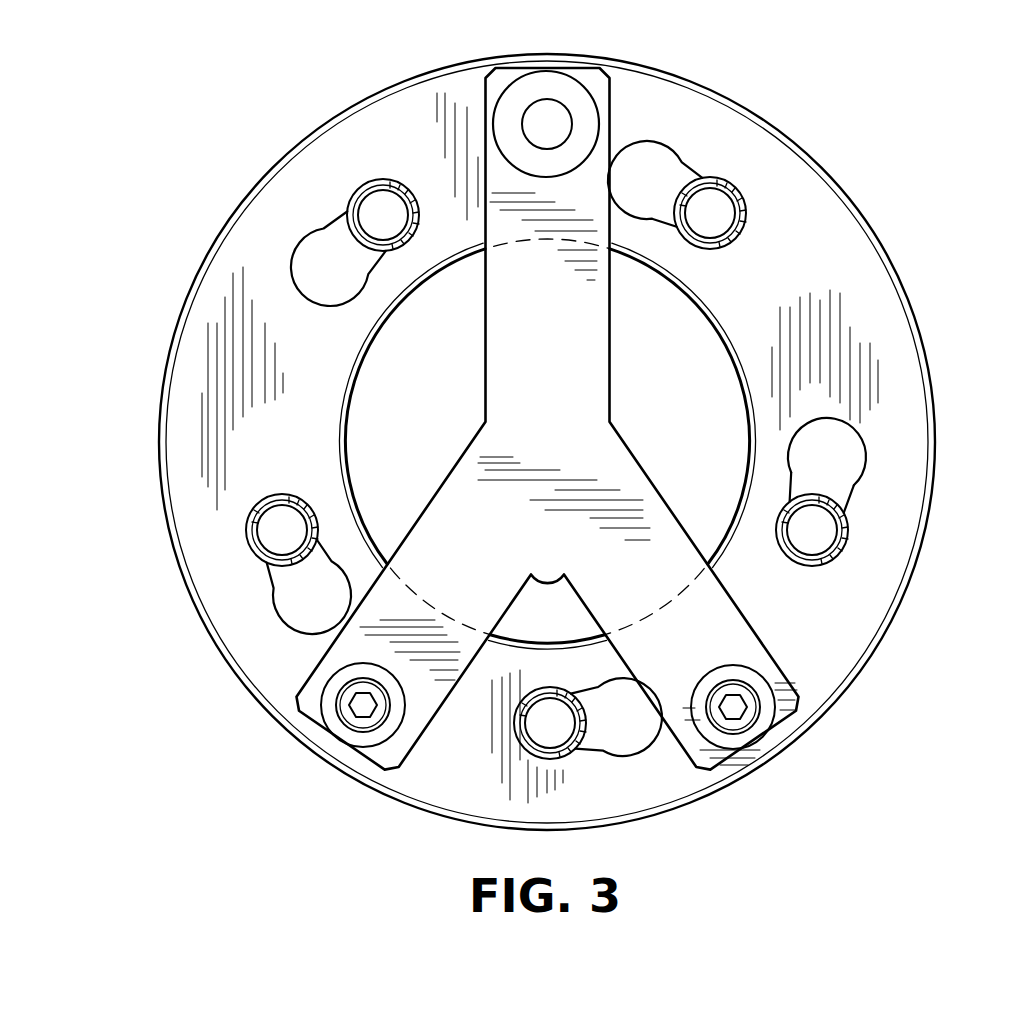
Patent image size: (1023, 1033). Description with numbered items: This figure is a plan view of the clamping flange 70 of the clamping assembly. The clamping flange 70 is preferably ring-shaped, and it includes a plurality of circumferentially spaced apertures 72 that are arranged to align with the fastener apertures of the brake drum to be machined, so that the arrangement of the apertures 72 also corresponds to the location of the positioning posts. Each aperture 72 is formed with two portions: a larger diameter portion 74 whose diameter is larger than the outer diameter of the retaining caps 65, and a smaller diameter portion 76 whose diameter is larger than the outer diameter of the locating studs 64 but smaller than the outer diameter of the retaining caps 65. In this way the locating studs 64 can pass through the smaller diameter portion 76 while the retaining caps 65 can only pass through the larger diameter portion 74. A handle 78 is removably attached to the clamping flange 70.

The locating stud 64 is at (713, 210).
The retaining cap 65 is at (747, 212).
The clamping flange 70 is at (580, 442).
The aperture 72 is at (894, 465).
The larger diameter portion 74 is at (863, 475).
The smaller diameter portion 76 is at (848, 505).
The handle 78 is at (460, 503).